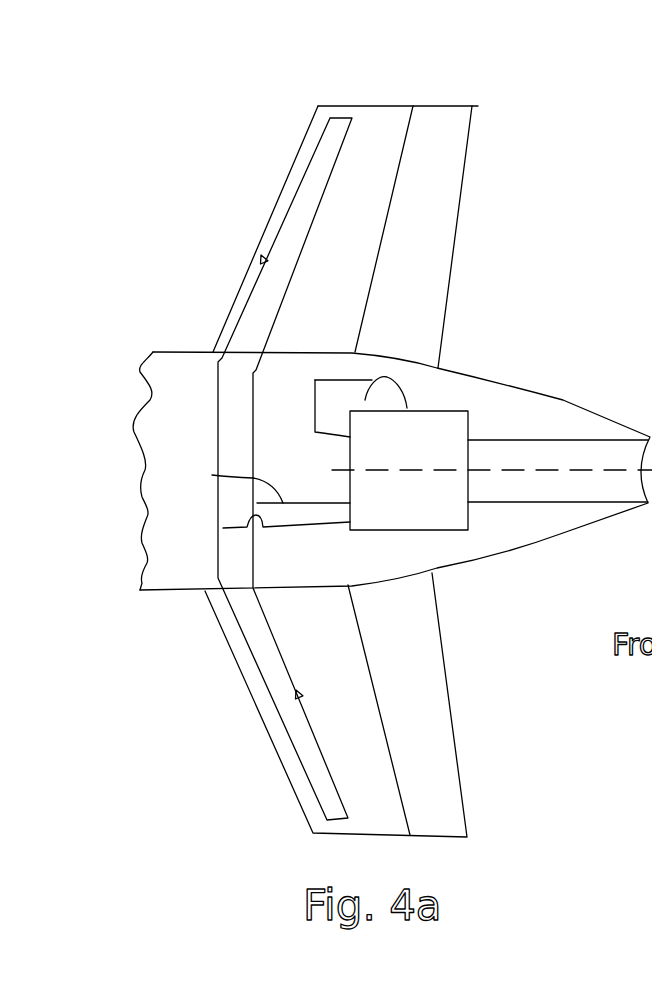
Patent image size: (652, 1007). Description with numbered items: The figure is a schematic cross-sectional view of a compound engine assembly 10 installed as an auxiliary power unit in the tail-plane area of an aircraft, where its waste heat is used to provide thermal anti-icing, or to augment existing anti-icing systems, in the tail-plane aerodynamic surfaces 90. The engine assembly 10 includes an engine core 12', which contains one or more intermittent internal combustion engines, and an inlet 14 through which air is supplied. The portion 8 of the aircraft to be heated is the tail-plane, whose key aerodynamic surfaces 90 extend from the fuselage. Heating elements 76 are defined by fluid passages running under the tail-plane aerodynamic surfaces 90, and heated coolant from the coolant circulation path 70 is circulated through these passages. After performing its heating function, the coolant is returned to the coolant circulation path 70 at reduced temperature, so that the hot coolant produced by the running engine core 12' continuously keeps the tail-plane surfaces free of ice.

The portion of the aircraft to be heated 8 is at (370, 118).
The compound engine assembly 10 is at (473, 541).
The engine core 12' is at (484, 438).
The inlet 14 is at (397, 388).
The coolant circulation path 70 is at (212, 475).
The heating elements 76 is at (320, 140).
The tail-plane aerodynamic surfaces 90 is at (375, 138).